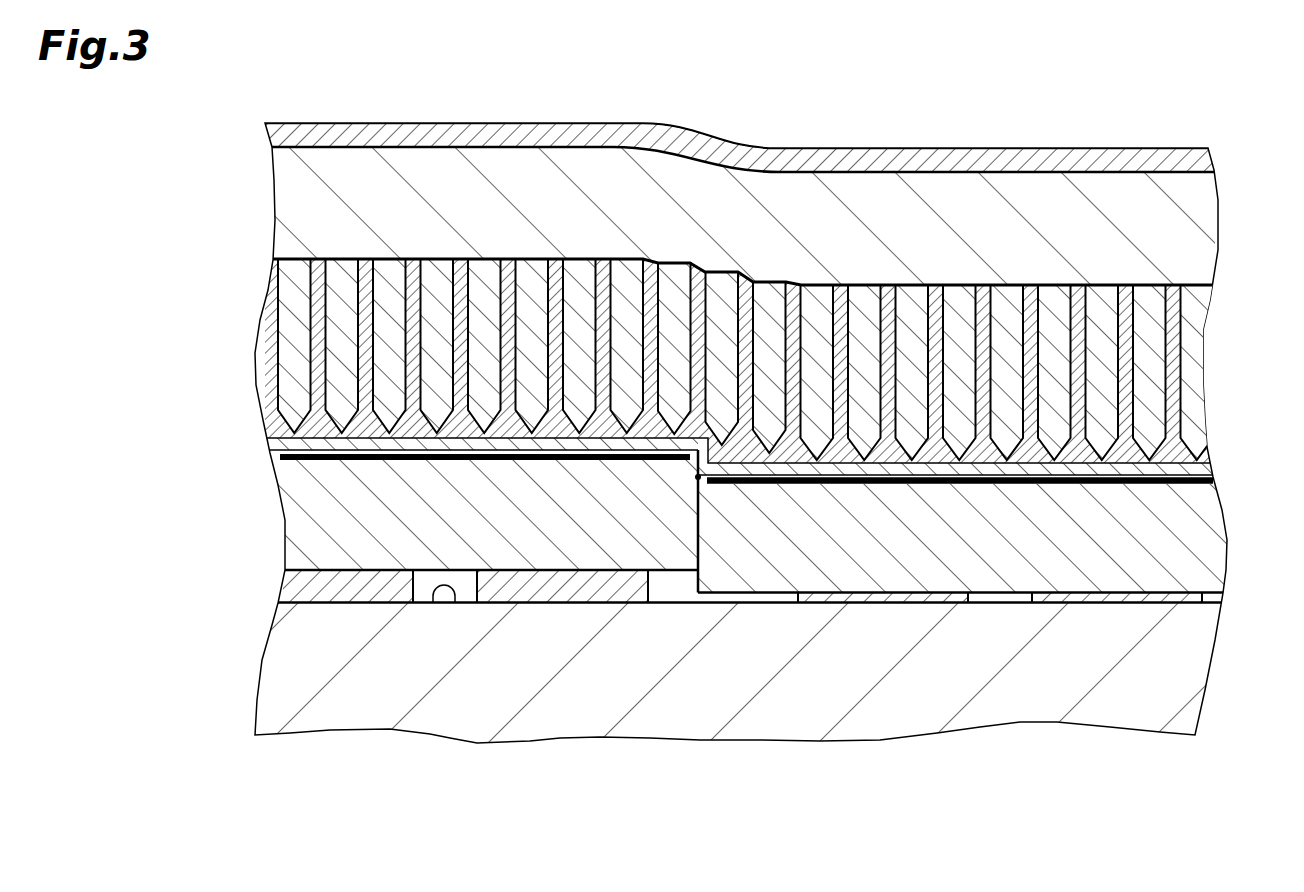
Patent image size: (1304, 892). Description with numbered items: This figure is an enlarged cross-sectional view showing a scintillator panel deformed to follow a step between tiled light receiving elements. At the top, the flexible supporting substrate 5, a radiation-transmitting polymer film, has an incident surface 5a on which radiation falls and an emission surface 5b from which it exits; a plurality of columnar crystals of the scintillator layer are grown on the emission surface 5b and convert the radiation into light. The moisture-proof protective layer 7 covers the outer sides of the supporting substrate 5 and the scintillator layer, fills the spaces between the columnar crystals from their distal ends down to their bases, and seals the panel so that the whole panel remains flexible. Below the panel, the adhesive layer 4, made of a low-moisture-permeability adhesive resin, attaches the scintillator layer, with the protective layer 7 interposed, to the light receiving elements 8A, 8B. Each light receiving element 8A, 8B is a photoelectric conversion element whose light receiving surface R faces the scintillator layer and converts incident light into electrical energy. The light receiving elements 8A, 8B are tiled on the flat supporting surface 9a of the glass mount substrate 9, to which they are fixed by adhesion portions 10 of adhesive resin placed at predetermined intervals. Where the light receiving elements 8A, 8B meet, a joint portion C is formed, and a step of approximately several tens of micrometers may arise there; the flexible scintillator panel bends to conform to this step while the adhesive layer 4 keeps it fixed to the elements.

The adhesive layer 4 is at (1213, 471).
The supporting substrate 5 is at (866, 207).
The incident surface 5a is at (593, 146).
The emission surface 5b is at (505, 272).
The moisture-proof protective layer 7 is at (270, 322).
The light receiving surface R is at (279, 457).
The light receiving element 8A is at (351, 520).
The light receiving element 8B is at (1008, 557).
The mount substrate 9 is at (508, 687).
The supporting surface 9a is at (435, 603).
The adhesion portion 10 is at (565, 590).
The joint portion C is at (698, 477).